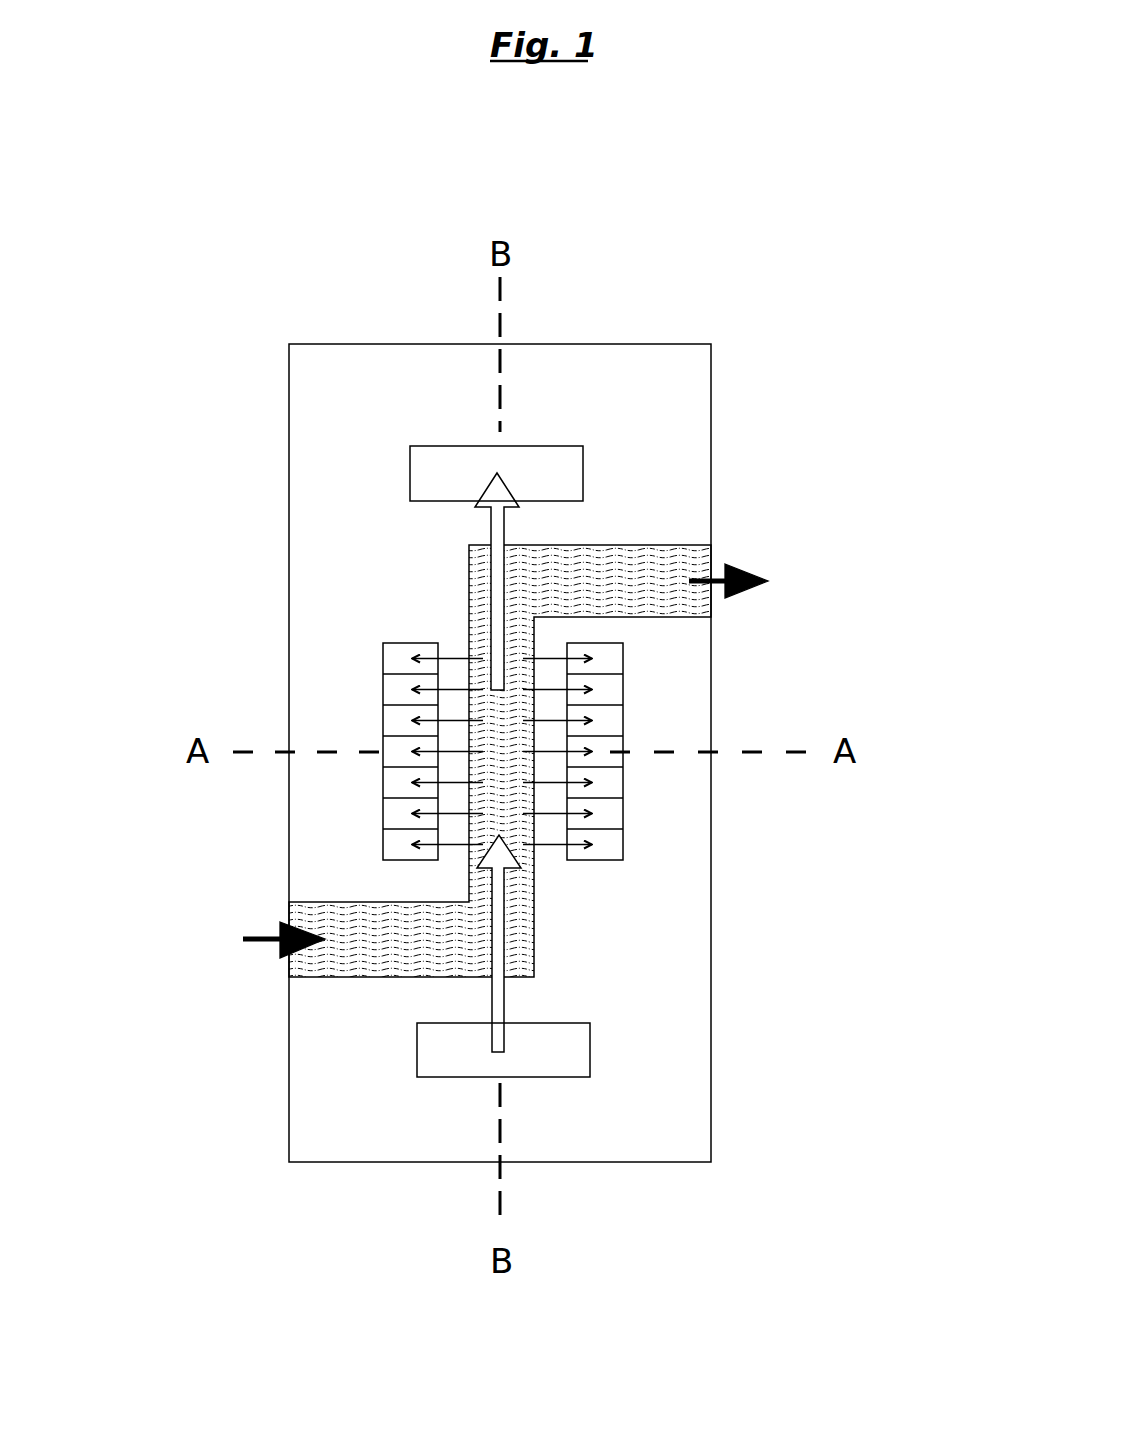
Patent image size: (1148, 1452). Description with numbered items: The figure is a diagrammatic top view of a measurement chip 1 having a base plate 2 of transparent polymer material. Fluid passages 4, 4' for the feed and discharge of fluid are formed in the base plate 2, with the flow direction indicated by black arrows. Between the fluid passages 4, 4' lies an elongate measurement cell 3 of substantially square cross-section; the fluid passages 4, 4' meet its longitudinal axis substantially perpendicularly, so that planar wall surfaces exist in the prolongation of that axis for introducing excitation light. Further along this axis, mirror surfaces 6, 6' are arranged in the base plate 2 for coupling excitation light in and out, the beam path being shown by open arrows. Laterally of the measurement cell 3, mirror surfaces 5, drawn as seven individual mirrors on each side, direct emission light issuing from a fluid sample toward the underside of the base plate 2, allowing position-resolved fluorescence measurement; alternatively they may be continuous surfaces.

The measurement chip 1 is at (706, 271).
The base plate 2 is at (691, 438).
The measurement cell 3 is at (505, 737).
The fluid passage 4 is at (382, 996).
The fluid passage 4' is at (644, 518).
The mirror surfaces 5 is at (402, 782).
The mirror surface 6 is at (615, 989).
The mirror surface 6' is at (427, 379).